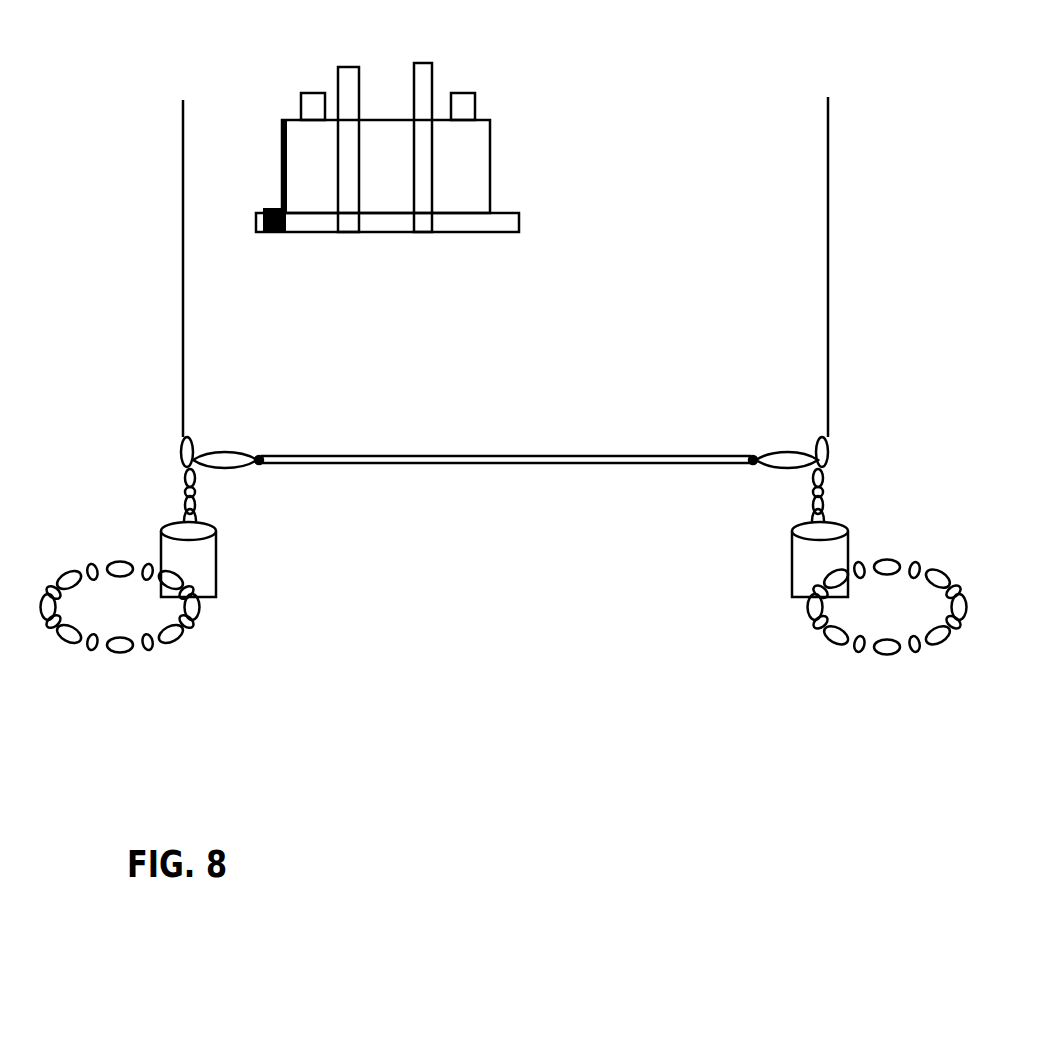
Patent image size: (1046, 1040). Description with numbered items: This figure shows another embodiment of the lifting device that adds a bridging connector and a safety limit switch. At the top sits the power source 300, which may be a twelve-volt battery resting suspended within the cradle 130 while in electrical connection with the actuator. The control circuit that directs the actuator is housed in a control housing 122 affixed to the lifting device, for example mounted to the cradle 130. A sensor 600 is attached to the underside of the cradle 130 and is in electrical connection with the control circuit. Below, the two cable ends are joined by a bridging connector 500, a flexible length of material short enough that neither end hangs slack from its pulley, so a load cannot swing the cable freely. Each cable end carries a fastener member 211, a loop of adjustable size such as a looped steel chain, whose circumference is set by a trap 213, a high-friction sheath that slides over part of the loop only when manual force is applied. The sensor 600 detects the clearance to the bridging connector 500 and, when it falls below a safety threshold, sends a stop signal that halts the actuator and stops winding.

The control housing 122 is at (308, 155).
The cradle 130 is at (433, 92).
The power source 300 is at (496, 182).
The sensor 600 is at (276, 231).
The bridging connector 500 is at (495, 458).
The trap 213 is at (200, 572).
The first fastener member 211 is at (110, 633).